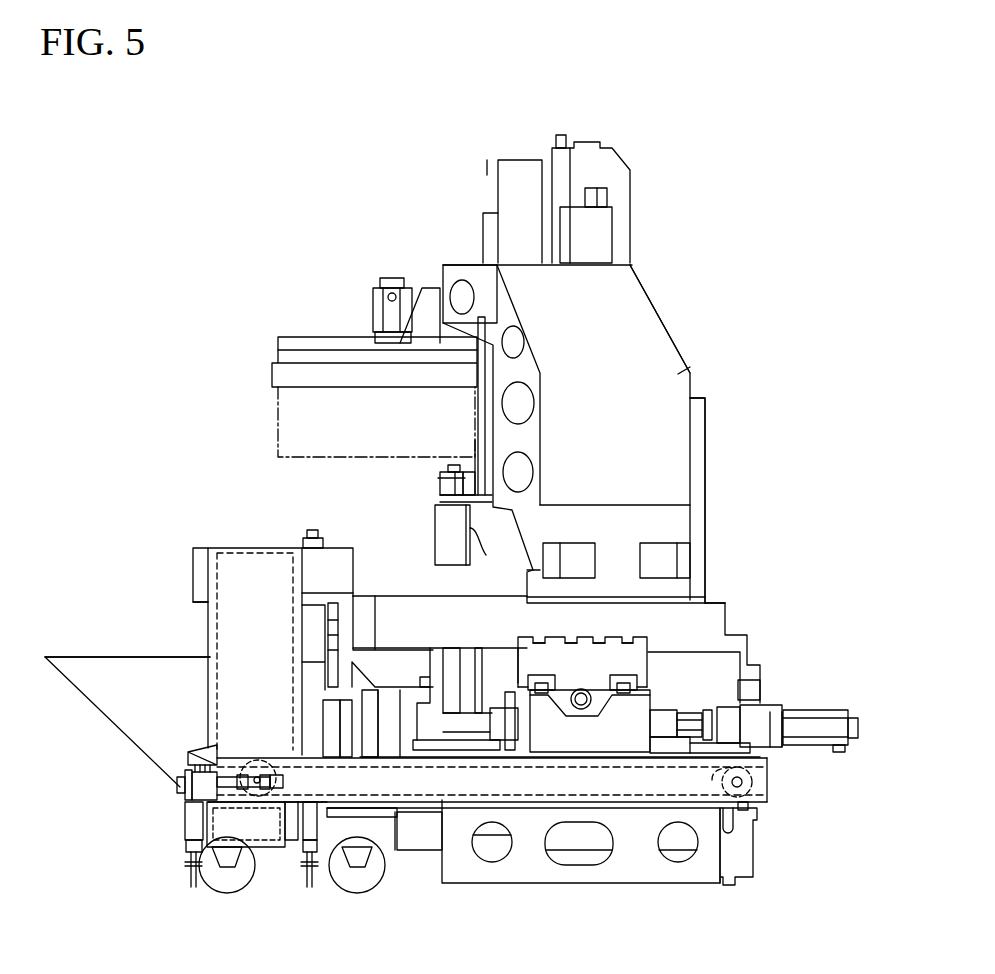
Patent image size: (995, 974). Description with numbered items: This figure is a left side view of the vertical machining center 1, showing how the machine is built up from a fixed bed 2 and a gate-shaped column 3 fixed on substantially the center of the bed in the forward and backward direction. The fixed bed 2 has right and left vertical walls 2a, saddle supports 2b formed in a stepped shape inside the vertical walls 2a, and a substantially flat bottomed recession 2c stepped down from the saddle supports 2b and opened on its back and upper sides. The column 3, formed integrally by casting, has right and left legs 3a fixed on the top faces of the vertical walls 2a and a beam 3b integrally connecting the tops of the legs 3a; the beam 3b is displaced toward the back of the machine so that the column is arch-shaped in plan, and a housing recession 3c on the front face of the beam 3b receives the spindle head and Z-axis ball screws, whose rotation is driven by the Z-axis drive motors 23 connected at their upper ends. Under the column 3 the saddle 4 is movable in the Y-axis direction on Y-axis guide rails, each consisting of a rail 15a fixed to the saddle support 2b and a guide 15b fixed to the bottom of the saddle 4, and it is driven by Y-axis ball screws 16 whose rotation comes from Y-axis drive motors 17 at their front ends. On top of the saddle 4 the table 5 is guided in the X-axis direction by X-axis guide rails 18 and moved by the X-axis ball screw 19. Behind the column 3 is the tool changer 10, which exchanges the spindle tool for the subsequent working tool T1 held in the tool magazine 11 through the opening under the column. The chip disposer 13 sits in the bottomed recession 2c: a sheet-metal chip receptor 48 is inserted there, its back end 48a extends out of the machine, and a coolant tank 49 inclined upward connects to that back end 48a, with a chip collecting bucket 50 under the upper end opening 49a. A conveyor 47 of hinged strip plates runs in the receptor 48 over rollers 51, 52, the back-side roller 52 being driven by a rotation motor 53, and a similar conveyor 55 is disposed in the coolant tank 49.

The vertical machining center 1 is at (298, 183).
The fixed bed 2 is at (760, 840).
The vertical wall 2a is at (727, 625).
The saddle support 2b is at (765, 760).
The bottomed recession 2c is at (633, 808).
The column 3 is at (674, 345).
The leg 3a is at (705, 548).
The beam 3b is at (643, 287).
The housing recession 3c is at (680, 374).
The saddle 4 is at (647, 700).
The table 5 is at (640, 633).
The tool changer 10 is at (410, 272).
The tool magazine 11 is at (272, 345).
The chip disposer 13 is at (190, 542).
The rail 15a is at (737, 737).
The guide 15b is at (698, 716).
The Y-axis ball screw 16 is at (452, 702).
The Y-axis drive motor 17 is at (820, 712).
The X-axis guide rail 18 is at (528, 698).
The X-axis ball screw 19 is at (586, 694).
The Z-axis drive motor 23 is at (612, 230).
The conveyor 47 is at (460, 800).
The chip receptor 48 is at (538, 802).
The back end 48a is at (278, 775).
The coolant tank 49 is at (190, 563).
The upper end opening 49a is at (200, 605).
The chip collecting bucket 50 is at (97, 657).
The roller 51 is at (712, 780).
The roller 52 is at (282, 800).
The rotation motor 53 is at (177, 780).
The conveyor 55 is at (298, 583).
The subsequent working tool T1 is at (471, 523).